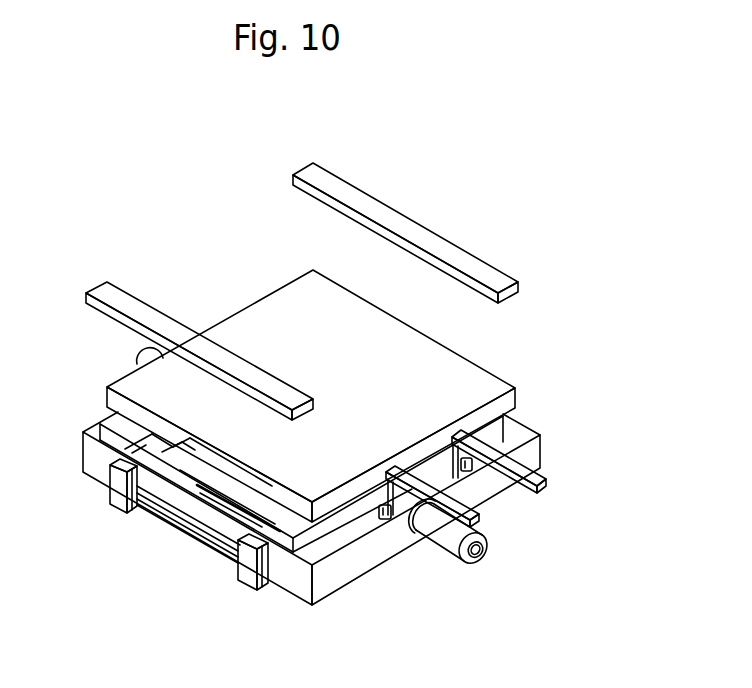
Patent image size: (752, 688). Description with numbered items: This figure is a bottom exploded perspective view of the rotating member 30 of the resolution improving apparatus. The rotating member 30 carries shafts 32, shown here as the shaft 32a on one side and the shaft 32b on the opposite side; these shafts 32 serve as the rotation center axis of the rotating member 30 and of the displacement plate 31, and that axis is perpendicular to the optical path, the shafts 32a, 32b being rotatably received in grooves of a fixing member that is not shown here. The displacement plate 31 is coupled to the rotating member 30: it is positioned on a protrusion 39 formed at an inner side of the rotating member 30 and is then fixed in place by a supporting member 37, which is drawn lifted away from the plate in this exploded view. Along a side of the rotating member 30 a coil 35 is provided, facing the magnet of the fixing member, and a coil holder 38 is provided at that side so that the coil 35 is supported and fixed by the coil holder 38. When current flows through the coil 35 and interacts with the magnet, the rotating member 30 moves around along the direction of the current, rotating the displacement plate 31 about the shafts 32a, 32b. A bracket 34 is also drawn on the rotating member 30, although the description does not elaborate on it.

The rotating member 30 is at (333, 578).
The displacement plate 31 is at (266, 310).
The shafts 32 is at (452, 540).
The shaft 32a is at (477, 530).
The shaft 32b is at (137, 364).
The bracket 34 is at (547, 467).
The coil 35 is at (195, 540).
The supporting member 37 is at (408, 222).
The coil holder 38 is at (248, 575).
The protrusion 39 is at (193, 485).